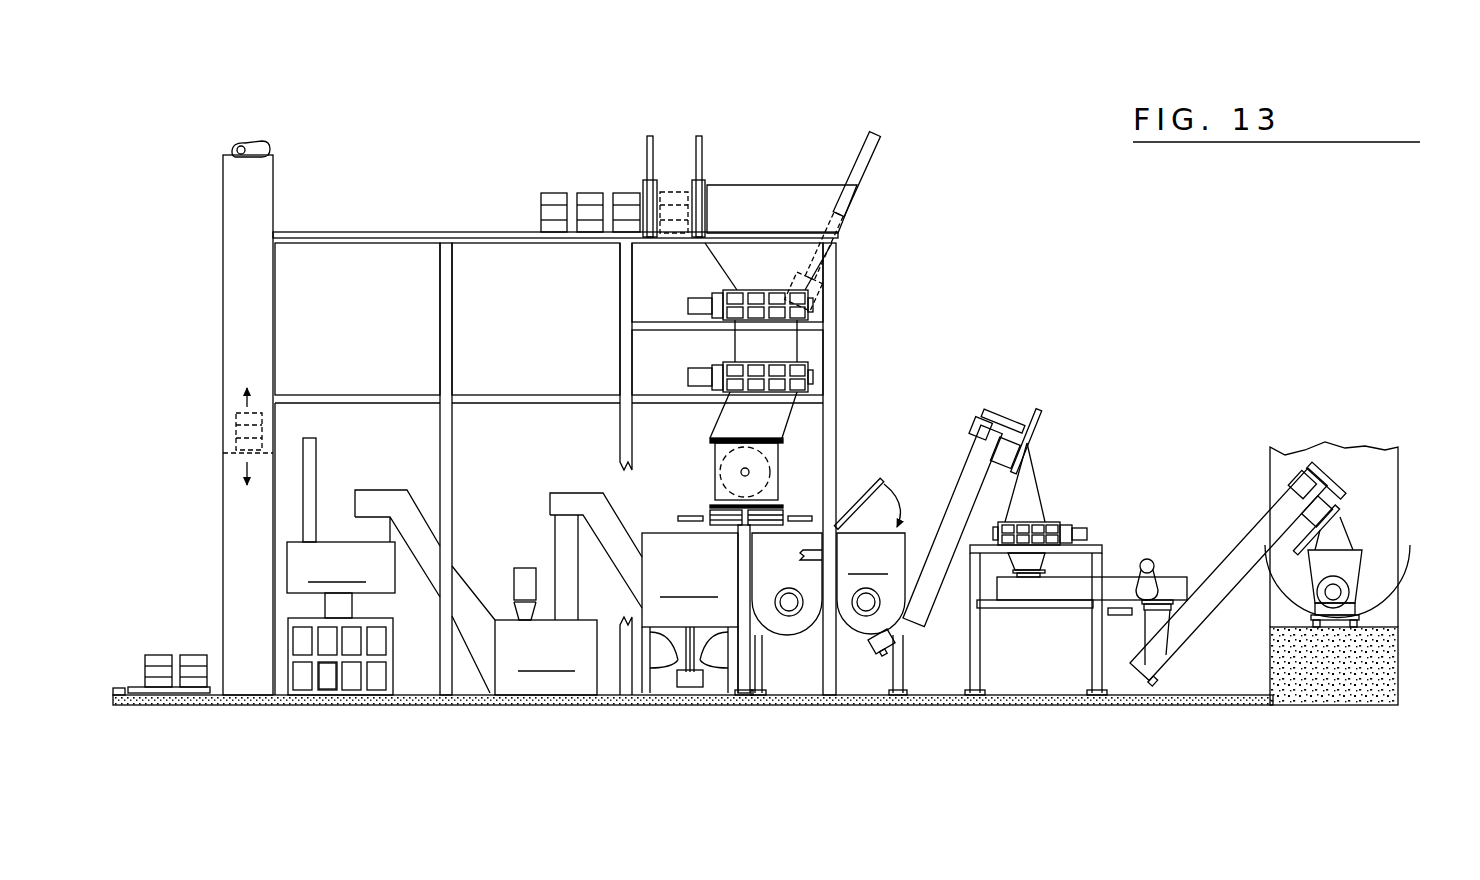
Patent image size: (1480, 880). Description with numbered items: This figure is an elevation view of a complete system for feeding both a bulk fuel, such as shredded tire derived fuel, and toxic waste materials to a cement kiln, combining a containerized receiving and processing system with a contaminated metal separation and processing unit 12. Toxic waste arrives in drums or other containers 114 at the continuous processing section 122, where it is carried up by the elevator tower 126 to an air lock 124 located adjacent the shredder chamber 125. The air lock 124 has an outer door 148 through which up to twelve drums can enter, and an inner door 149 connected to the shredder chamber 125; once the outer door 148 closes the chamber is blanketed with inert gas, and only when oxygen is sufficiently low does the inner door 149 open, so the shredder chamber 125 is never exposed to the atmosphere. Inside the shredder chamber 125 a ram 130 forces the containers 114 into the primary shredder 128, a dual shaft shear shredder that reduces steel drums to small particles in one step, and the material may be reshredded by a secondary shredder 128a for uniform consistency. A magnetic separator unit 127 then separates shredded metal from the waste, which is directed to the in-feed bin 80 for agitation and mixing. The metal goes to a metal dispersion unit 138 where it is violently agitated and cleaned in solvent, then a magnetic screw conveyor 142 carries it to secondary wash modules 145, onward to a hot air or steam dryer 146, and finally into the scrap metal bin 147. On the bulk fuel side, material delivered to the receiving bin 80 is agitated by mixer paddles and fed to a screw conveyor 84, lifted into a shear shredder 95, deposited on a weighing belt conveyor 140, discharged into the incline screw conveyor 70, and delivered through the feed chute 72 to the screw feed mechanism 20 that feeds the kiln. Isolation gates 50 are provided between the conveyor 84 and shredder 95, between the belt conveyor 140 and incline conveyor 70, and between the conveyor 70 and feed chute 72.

The tire processing machine 12 is at (1312, 440).
The screw feed mechanism 20 is at (1352, 588).
The isolation gates 50 is at (678, 517).
The incline screw conveyor 70 is at (1227, 567).
The feed chute 72 is at (1345, 565).
The collection/receiving bin 80 is at (829, 586).
The screw conveyor 84 is at (940, 565).
The shear shredder 95 is at (1072, 525).
The containers 114 is at (578, 193).
The continuous processing section 122 is at (355, 232).
The air lock 124 is at (673, 188).
The shredder chamber 125 is at (770, 185).
The elevator tower 126 is at (222, 357).
The magnetic separator unit 127 is at (775, 468).
The primary shredder 128 is at (815, 303).
The secondary shredder 128a is at (815, 375).
The ram 130 is at (862, 168).
The metal dispersion unit 138 is at (690, 613).
The weighing belt conveyor 140 is at (1118, 575).
The magnetic screw conveyor 142 is at (368, 490).
The secondary wash module 145 is at (546, 631).
The hot air or steam dryer 146 is at (341, 566).
The scrap metal bin 147 is at (330, 677).
The outer door 148 is at (645, 165).
The inner door 149 is at (700, 168).